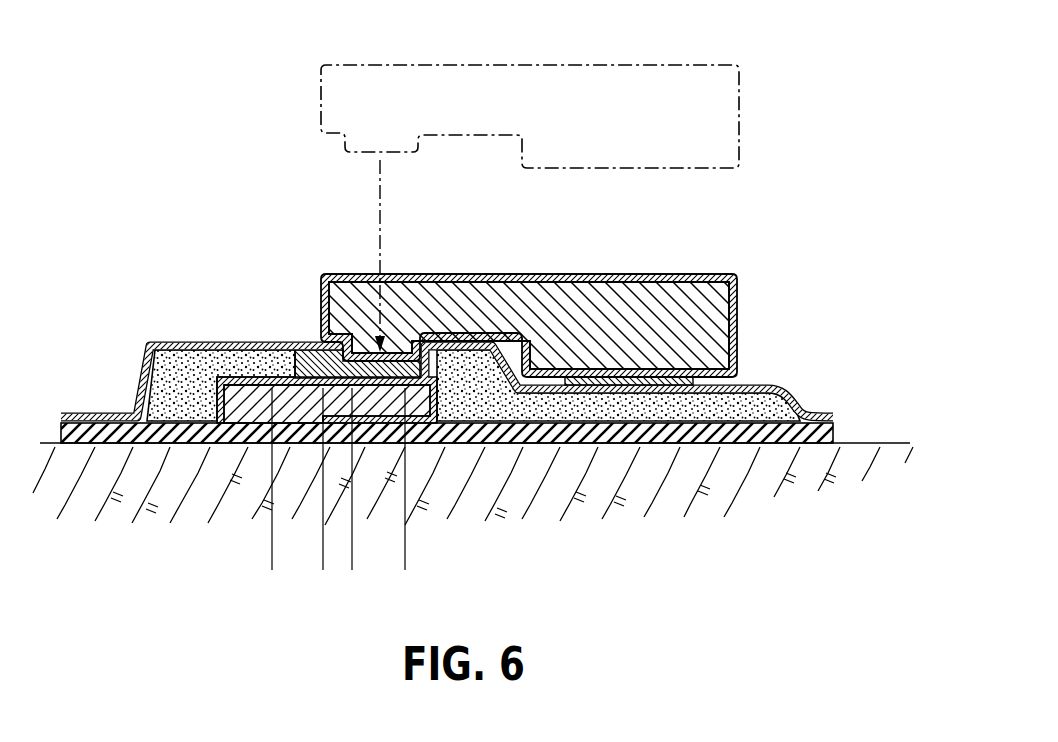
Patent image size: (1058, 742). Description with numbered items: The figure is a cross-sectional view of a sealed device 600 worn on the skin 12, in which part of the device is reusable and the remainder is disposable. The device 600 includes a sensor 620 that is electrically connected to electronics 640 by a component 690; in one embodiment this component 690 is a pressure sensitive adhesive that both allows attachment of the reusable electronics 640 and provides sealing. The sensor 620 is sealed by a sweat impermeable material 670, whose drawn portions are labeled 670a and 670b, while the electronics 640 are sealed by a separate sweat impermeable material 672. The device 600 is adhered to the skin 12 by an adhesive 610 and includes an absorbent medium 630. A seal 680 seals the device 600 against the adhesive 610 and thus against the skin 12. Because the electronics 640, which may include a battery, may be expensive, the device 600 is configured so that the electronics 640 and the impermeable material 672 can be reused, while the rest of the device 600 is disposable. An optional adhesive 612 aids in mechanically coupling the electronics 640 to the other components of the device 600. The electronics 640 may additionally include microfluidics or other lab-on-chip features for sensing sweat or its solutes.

The device 600 is at (106, 181).
The skin 12 is at (530, 508).
The adhesive 610 is at (836, 436).
The adhesive 612 is at (697, 381).
The sensor 620 is at (258, 408).
The absorbent medium 630 is at (185, 352).
The electronics 640 is at (504, 194).
The sweat impermeable material 670 is at (222, 376).
The first bonding pad 670a is at (405, 570).
The second bonding pad 670b is at (323, 570).
The sweat impermeable material 672 is at (621, 274).
The seal 680 is at (138, 388).
The component 690 is at (292, 362).